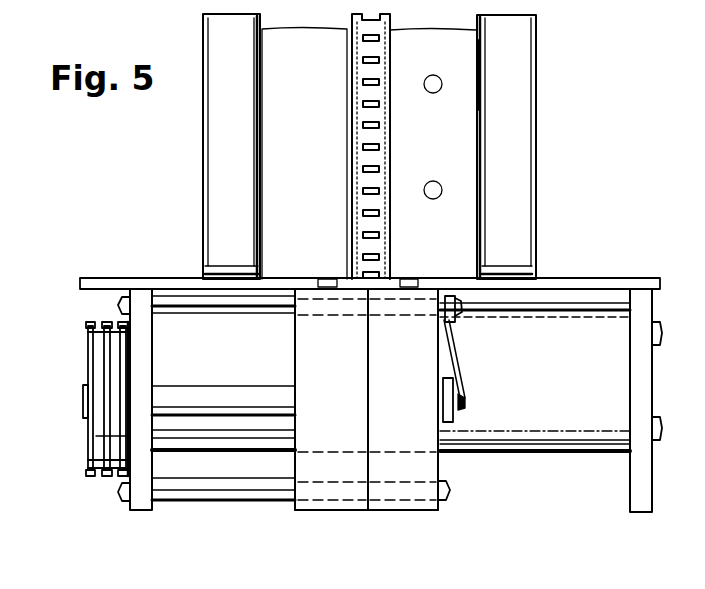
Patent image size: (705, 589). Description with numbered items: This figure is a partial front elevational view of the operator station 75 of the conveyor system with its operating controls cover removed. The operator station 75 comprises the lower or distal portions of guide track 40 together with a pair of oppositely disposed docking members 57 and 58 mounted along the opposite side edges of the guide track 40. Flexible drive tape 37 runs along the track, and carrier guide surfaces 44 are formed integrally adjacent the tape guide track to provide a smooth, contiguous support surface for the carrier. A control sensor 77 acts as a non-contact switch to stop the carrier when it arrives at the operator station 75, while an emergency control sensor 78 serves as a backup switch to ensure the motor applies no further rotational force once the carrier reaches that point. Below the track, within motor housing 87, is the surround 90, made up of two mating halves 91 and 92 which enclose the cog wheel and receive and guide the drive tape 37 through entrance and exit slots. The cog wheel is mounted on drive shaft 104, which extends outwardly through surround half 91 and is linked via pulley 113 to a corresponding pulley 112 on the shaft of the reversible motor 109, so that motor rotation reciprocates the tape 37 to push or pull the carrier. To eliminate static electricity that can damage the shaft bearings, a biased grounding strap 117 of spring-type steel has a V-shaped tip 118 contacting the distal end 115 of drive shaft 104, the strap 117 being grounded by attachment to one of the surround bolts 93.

The flexible drive tape 37 is at (357, 92).
The guide track 40 is at (481, 75).
The carrier guide surfaces 44 is at (313, 205).
The docking member 57 is at (215, 145).
The docking member 58 is at (510, 155).
The operator station 75 is at (556, 97).
The control sensor 77 is at (433, 75).
The emergency control sensor 78 is at (433, 181).
The motor housing 87 is at (580, 278).
The surround 90 is at (349, 516).
The surround half 91 is at (335, 440).
The surround half 92 is at (407, 445).
The surround bolt 93 is at (458, 312).
The drive shaft 104 is at (205, 405).
The reversible motor 109 is at (556, 437).
The pulley 112 is at (98, 325).
The pulley 113 is at (90, 440).
The distal end of drive shaft 115 is at (452, 420).
The biased grounding strap 117 is at (456, 360).
The V-shaped tip 118 is at (464, 402).